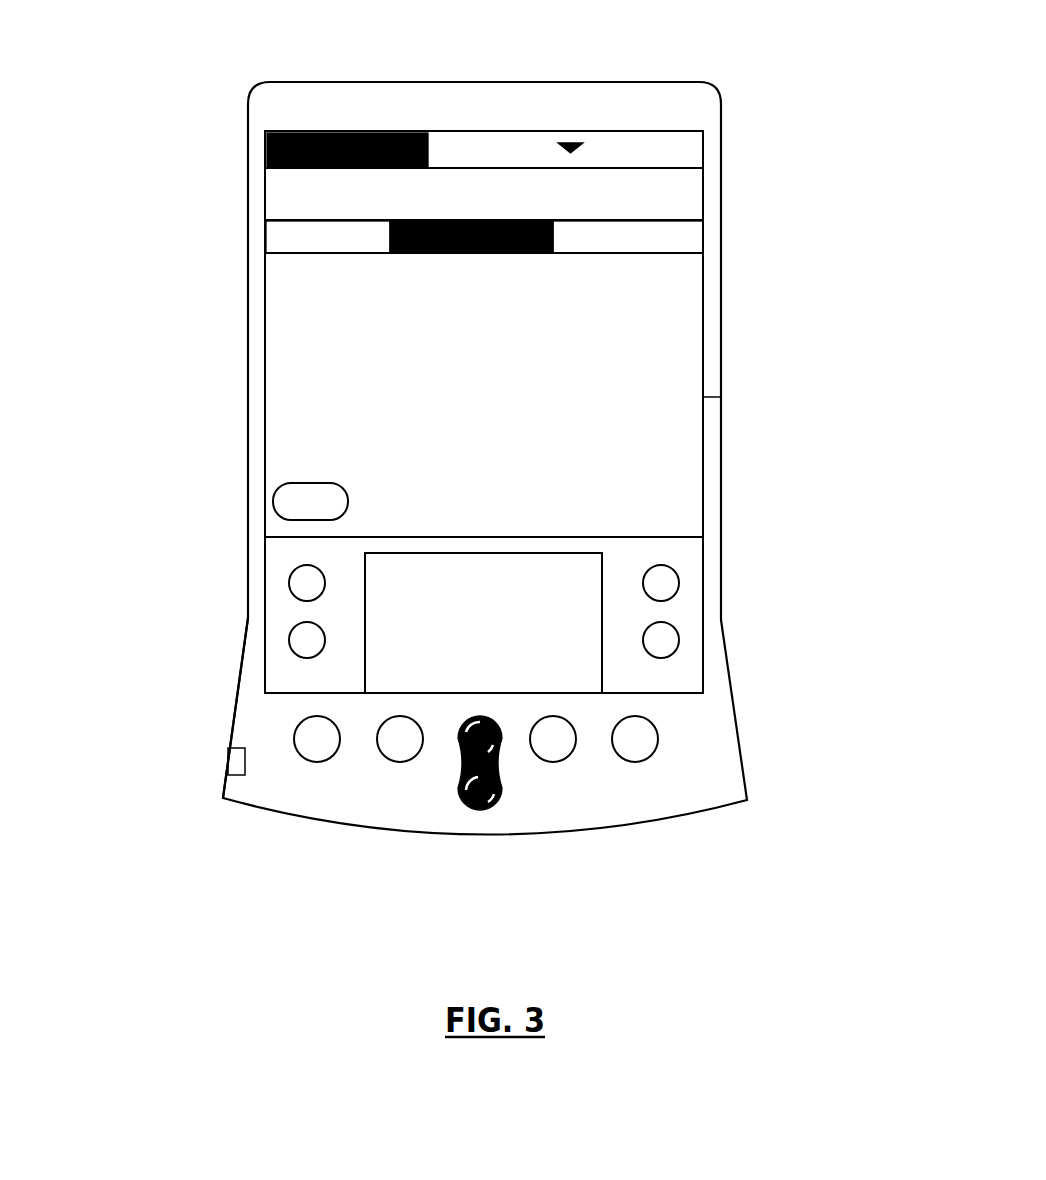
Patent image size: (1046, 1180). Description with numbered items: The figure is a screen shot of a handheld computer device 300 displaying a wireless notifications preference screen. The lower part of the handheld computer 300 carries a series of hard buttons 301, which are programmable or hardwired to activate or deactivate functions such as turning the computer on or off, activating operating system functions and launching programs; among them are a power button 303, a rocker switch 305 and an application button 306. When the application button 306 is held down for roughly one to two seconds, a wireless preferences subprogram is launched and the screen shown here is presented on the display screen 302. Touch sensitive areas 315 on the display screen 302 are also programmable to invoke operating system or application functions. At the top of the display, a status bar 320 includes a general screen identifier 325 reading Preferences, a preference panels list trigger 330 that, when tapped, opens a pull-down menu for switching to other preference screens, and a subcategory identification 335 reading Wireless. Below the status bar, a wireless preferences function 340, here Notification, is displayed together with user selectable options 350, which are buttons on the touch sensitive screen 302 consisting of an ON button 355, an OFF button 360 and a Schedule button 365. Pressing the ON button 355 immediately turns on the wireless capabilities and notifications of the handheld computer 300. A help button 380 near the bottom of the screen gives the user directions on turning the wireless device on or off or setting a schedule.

The handheld computer device 300 is at (764, 330).
The hard buttons 301 is at (179, 746).
The display screen 302 is at (712, 411).
The power button 303 is at (256, 787).
The rocker switch 305 is at (517, 810).
The application button 306 is at (677, 762).
The touch sensitive areas 315 is at (260, 578).
The status bar 320 is at (252, 160).
The general screen identifier 325 is at (311, 115).
The preference panels list trigger 330 is at (563, 116).
The subcategory identification 335 is at (648, 116).
The wireless preferences function 340 is at (257, 200).
The user selectable options 350 is at (251, 242).
The ON button 355 is at (316, 274).
The OFF button 360 is at (450, 278).
The Schedule button 365 is at (622, 274).
The help button 380 is at (354, 460).